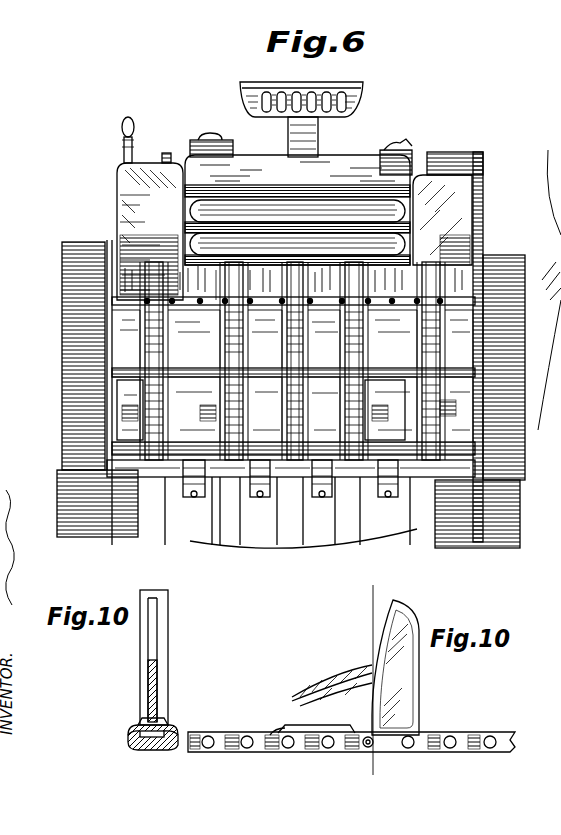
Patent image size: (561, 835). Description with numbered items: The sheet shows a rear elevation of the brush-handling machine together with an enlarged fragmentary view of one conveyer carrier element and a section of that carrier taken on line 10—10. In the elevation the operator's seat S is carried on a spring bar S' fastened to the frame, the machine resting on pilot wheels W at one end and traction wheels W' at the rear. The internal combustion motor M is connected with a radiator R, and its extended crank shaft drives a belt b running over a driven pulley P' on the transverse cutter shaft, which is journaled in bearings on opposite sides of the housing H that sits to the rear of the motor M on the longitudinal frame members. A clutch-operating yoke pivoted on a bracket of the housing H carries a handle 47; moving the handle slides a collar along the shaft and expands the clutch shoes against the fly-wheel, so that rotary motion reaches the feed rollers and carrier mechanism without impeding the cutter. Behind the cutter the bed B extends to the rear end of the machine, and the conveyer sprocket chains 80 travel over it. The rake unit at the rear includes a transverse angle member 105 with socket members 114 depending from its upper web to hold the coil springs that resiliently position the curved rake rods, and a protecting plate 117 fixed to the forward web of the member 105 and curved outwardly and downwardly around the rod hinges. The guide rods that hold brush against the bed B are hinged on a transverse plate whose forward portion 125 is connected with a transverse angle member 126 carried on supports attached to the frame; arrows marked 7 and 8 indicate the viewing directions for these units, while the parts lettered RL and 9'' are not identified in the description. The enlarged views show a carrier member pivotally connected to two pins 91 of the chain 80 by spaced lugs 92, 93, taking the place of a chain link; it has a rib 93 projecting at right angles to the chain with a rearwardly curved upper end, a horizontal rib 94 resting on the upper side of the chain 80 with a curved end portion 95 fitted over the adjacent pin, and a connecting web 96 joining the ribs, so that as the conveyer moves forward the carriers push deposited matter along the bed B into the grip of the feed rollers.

In FIG. 6, the operator's seat S is at (301, 88).
In FIG. 6, the spring bar S' is at (288, 137).
In FIG. 6, the housing H is at (310, 175).
In FIG. 6, the radiator R is at (234, 146).
In FIG. 6, the handle 47 is at (134, 130).
In FIG. 6, the post 9'' is at (169, 149).
In FIG. 6, the internal combustion motor M is at (380, 158).
In FIG. 6, the driving belt b is at (455, 160).
In FIG. 6, the driven pulley P' is at (482, 338).
In FIG. 6, the right block RL is at (415, 200).
In FIG. 6, the traction wheels W' is at (288, 347).
In FIG. 6, the pilot wheels W is at (288, 521).
In FIG. 6, the sprocket chains 80 is at (215, 425).
In FIG. 9, the sprocket chains 80 is at (151, 749).
In FIG. 10, the sprocket chains 80 is at (467, 740).
In FIG. 6, the socket members 114 is at (146, 322).
In FIG. 6, the transverse angle member 105 is at (226, 302).
In FIG. 6, the protecting plate 117 is at (224, 355).
In FIG. 6, the bed B is at (138, 403).
In FIG. 6, the section arrow 7 is at (220, 278).
In FIG. 6, the section arrow 8 is at (215, 409).
In FIG. 6, the forward portion of transverse plate 125 is at (385, 480).
In FIG. 6, the transverse angle member 126 is at (108, 538).
In FIG. 9, the rib 93 is at (163, 648).
In FIG. 10, the rib 93 is at (420, 676).
In FIG. 9, the connecting web 96 is at (157, 671).
In FIG. 10, the connecting web 96 is at (366, 680).
In FIG. 9, the horizontal rib 94 is at (138, 725).
In FIG. 10, the horizontal rib 94 is at (290, 733).
In FIG. 9, the curved end portion 95 is at (130, 731).
In FIG. 10, the curved end portion 95 is at (278, 735).
In FIG. 9, the pins 91 is at (168, 730).
In FIG. 10, the pins 91 is at (305, 752).
In FIG. 10, the lug 92 is at (368, 755).
In FIG. 10, the section line 10 is at (373, 590).